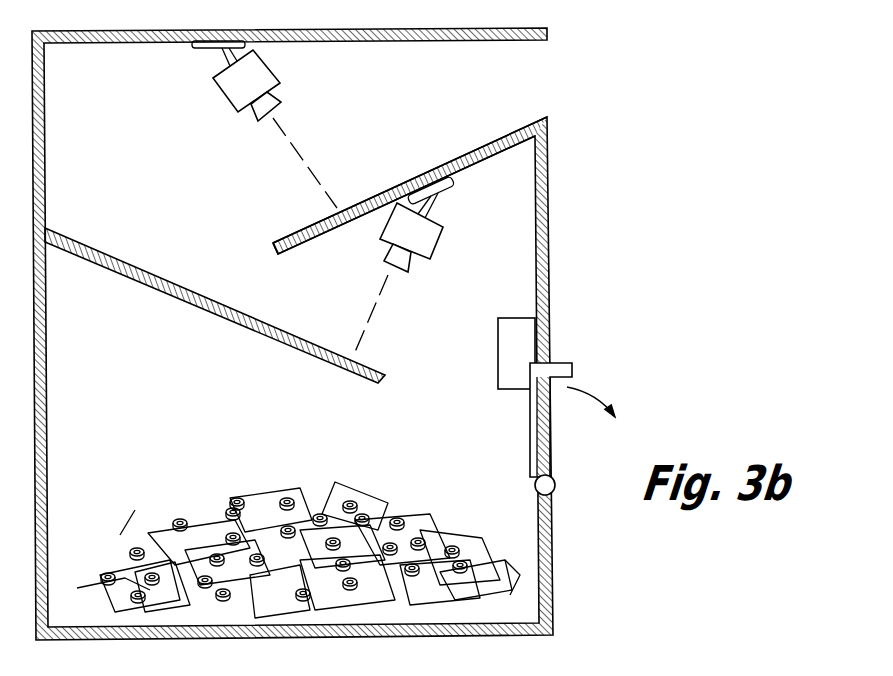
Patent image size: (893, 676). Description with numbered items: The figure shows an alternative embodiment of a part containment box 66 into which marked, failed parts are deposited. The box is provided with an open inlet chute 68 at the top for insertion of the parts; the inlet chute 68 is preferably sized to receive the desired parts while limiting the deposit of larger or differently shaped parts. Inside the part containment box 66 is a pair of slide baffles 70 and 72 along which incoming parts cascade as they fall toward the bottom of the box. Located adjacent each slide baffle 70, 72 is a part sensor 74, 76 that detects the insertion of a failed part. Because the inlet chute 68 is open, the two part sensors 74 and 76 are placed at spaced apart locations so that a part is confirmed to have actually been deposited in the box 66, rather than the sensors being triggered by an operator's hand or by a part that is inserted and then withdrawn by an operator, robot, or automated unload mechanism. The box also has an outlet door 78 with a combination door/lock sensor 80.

The part containment box 66 is at (379, 334).
The inlet chute 68 is at (545, 80).
The slide baffle 70 is at (443, 160).
The slide baffle 72 is at (165, 278).
The part sensor 74 is at (236, 93).
The part sensor 76 is at (428, 228).
The outlet door 78 is at (572, 372).
The door/lock sensor 80 is at (518, 333).